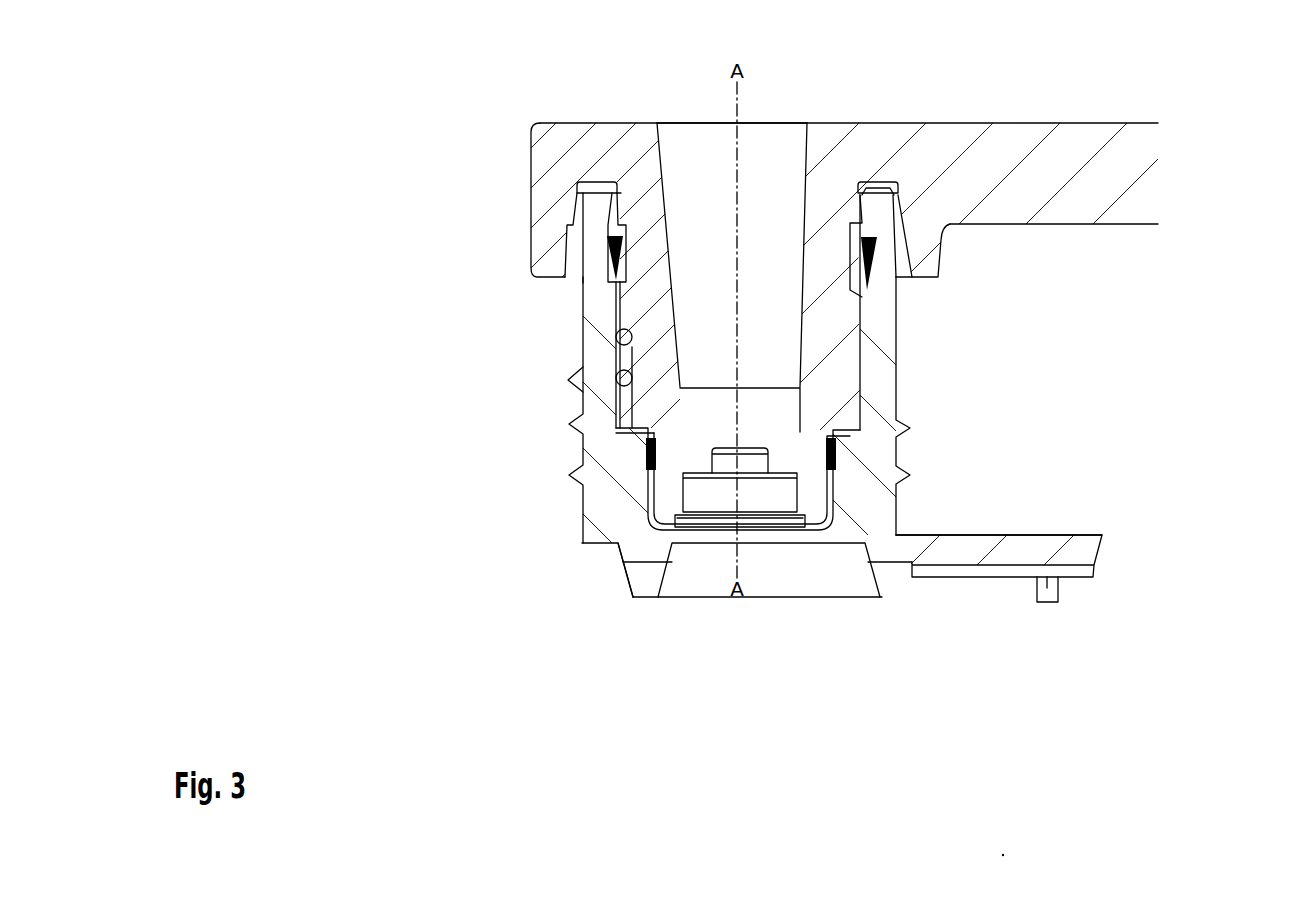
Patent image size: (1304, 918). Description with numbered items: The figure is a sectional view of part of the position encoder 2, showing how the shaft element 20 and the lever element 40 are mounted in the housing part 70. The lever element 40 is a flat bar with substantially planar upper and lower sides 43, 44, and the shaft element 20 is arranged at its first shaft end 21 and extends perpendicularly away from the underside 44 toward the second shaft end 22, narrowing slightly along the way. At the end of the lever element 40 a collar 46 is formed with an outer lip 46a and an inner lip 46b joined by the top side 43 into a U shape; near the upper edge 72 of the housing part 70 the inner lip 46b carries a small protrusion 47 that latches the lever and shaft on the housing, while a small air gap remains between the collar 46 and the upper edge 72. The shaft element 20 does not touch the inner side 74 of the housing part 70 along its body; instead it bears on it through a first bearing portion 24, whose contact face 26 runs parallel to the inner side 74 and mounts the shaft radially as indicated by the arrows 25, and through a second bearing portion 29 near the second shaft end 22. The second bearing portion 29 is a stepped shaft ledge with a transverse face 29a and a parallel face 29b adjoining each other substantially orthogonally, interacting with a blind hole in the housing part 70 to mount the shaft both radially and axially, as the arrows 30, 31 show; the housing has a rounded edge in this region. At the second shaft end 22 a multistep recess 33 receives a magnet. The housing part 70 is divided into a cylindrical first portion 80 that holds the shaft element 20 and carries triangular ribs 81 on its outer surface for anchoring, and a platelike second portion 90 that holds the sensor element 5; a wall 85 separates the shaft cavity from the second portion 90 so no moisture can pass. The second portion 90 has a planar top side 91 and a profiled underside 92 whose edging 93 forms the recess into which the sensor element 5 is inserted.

The position encoder 2 is at (992, 282).
The sensor element 5 is at (796, 583).
The shaft element 20 is at (787, 158).
The first shaft end 21 is at (713, 123).
The second shaft end 22 is at (767, 446).
The first bearing portion 24 is at (630, 299).
The arrows 25 is at (620, 311).
The contact face 26 is at (618, 341).
The second bearing portion 29 is at (672, 414).
The contact face 29a is at (650, 427).
The contact face 29b is at (657, 455).
The arrows 30 is at (620, 447).
The arrows 31 is at (832, 505).
The recess 33 is at (717, 517).
The lever element 40 is at (1140, 174).
The upper side 43 is at (1066, 124).
The lower side 44 is at (1110, 226).
The collar 46 is at (635, 124).
The outer lip 46a is at (547, 163).
The inner lip 46b is at (625, 213).
The protrusion 47 is at (620, 197).
The housing part 70 is at (607, 518).
The upper edge 72 is at (590, 184).
The inner side 74 is at (616, 372).
The first portion 80 is at (896, 350).
The triangular ribs 81 is at (902, 384).
The wall 85 is at (756, 540).
The second portion 90 is at (994, 550).
The top side 91 is at (1062, 535).
The underside 92 is at (1074, 570).
The edging 93 is at (640, 582).